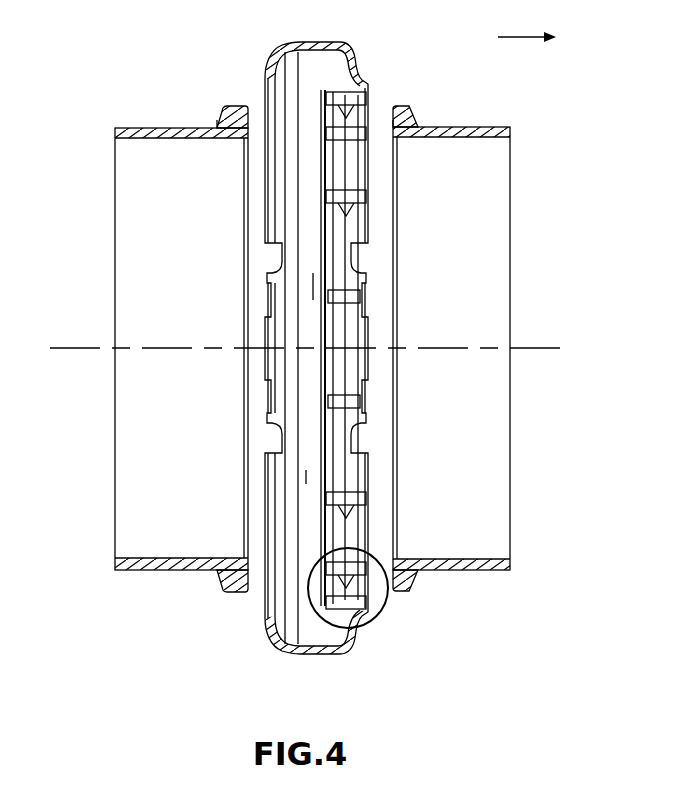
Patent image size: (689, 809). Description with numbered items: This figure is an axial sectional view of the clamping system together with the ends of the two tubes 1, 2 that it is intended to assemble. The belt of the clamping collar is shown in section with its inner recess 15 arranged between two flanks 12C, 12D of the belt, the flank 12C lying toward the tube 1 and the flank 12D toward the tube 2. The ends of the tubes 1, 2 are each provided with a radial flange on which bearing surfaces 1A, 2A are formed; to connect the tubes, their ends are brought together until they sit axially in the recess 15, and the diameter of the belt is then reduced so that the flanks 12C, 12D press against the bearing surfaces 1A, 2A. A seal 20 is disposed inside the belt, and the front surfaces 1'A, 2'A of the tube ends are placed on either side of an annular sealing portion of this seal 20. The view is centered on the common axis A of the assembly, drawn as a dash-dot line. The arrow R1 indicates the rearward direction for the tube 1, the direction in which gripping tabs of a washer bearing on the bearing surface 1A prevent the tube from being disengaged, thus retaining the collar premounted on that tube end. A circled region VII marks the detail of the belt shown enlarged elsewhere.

The tube 1 is at (451, 326).
The bearing surface 1A is at (416, 112).
The front surface 1'A is at (396, 89).
The tube 2 is at (181, 326).
The bearing surface 2A is at (218, 106).
The front surface 2'A is at (240, 89).
The flank 12C is at (370, 224).
The flank 12D is at (265, 160).
The inner recess 15 is at (313, 273).
The seal 20 is at (304, 477).
The axis of the clamping system A is at (62, 348).
The arrow R1 is at (527, 24).
The detail view VII is at (384, 624).